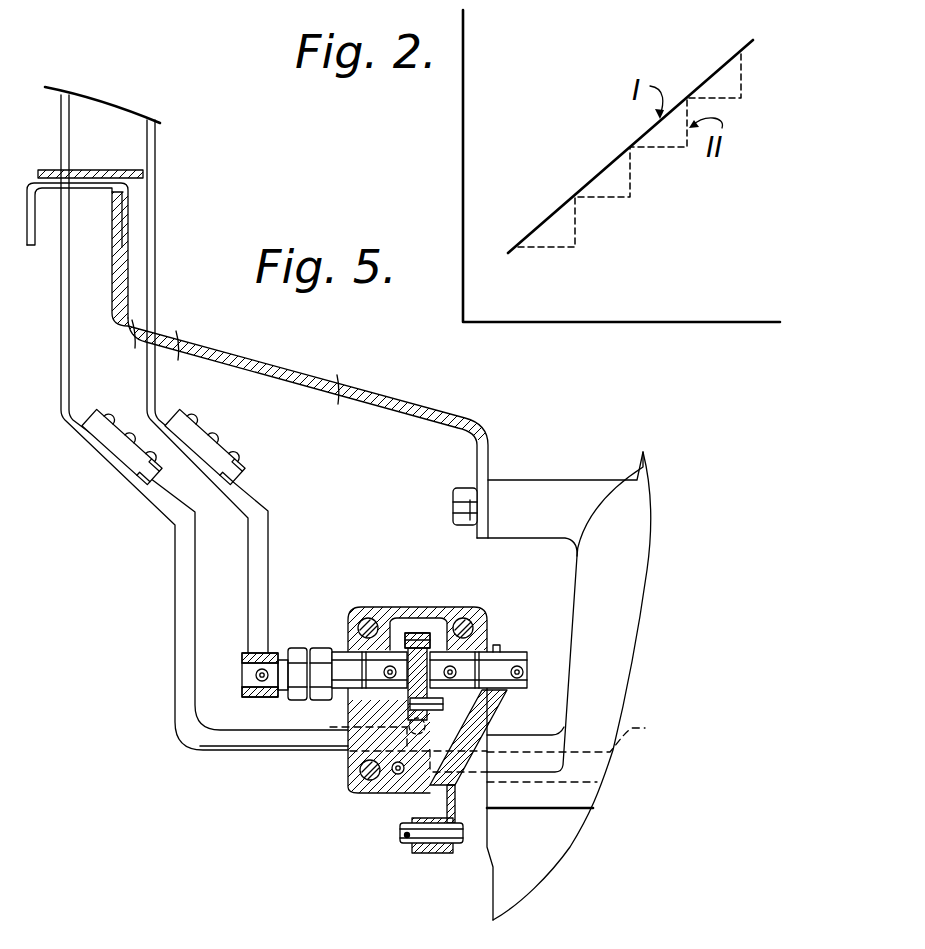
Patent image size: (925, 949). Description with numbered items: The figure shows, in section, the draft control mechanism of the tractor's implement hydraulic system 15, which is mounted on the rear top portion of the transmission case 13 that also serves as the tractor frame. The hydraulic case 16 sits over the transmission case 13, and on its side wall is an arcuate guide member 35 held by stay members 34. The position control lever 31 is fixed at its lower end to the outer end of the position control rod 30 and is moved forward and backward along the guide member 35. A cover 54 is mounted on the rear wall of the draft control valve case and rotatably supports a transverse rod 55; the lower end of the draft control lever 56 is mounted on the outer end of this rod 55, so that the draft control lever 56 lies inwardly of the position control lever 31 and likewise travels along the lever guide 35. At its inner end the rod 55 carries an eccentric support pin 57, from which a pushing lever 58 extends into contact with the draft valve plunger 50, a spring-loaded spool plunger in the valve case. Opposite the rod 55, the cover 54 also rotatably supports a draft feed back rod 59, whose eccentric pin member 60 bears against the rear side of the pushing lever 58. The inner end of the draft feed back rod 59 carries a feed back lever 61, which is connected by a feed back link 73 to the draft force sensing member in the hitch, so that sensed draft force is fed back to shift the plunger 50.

The transmission case 13 is at (487, 870).
The hydraulic system 15 is at (624, 457).
The hydraulic case 16 is at (607, 492).
The position control rod 30 is at (501, 752).
The position control lever 31 is at (73, 427).
The stay member 34 is at (288, 367).
The arcuate guide member 35 is at (30, 240).
The draft valve plunger 50 is at (412, 797).
The cover 54 is at (347, 763).
The rod 55 is at (352, 663).
The draft control lever 56 is at (155, 378).
The support pin 57 is at (413, 633).
The pushing lever 58 is at (400, 640).
The draft feed back rod 59 is at (507, 660).
The pin member 60 is at (408, 707).
The feed back lever 61 is at (447, 853).
The feed back link 73 is at (410, 845).